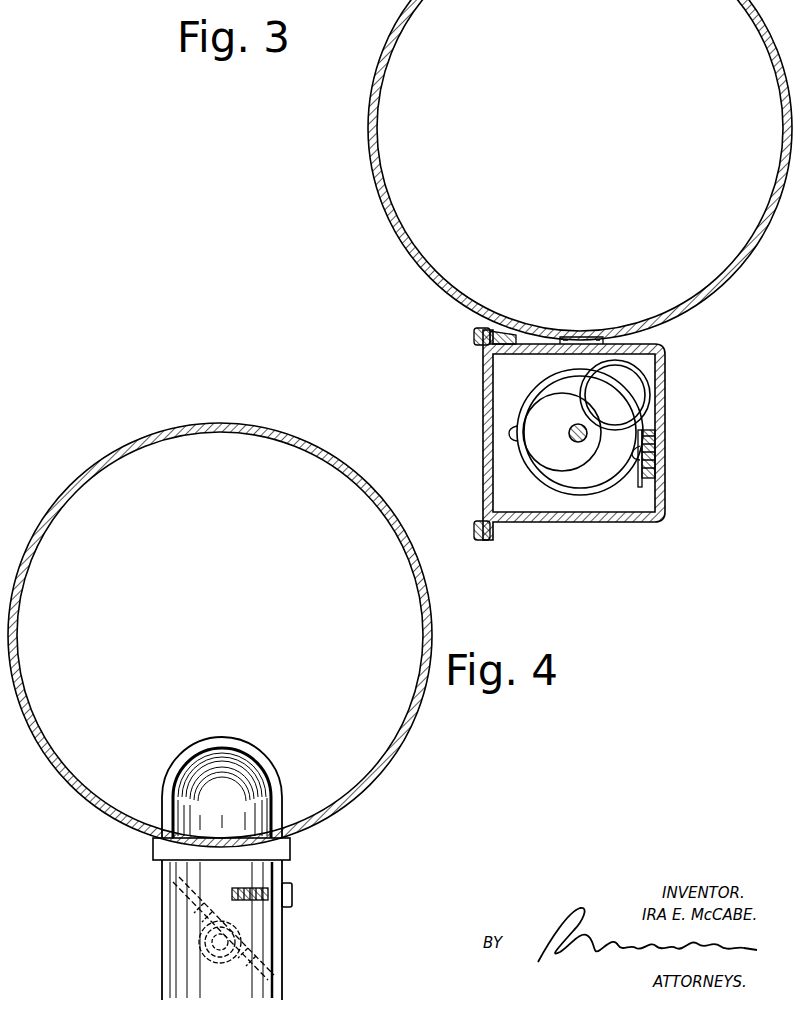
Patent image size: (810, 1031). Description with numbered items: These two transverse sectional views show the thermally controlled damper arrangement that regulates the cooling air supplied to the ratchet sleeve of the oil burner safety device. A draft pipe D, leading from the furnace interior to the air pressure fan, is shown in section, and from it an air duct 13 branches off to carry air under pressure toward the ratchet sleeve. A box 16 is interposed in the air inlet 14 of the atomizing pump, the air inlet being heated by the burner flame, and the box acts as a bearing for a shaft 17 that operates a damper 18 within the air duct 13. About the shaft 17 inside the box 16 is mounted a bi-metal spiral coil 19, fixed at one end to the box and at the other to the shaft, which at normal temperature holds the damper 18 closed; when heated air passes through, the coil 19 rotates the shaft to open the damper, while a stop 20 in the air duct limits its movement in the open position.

In FIG. 3, the draft pipe D is at (368, 133).
In FIG. 4, the draft pipe D is at (431, 603).
In FIG. 4, the air duct 13 is at (162, 898).
In FIG. 3, the air inlet 14 is at (646, 382).
In FIG. 3, the box 16 is at (614, 517).
In FIG. 3, the shaft 17 is at (572, 428).
In FIG. 4, the damper 18 is at (190, 905).
In FIG. 3, the bi-metal spiral coil 19 is at (518, 463).
In FIG. 4, the stop 20 is at (285, 917).